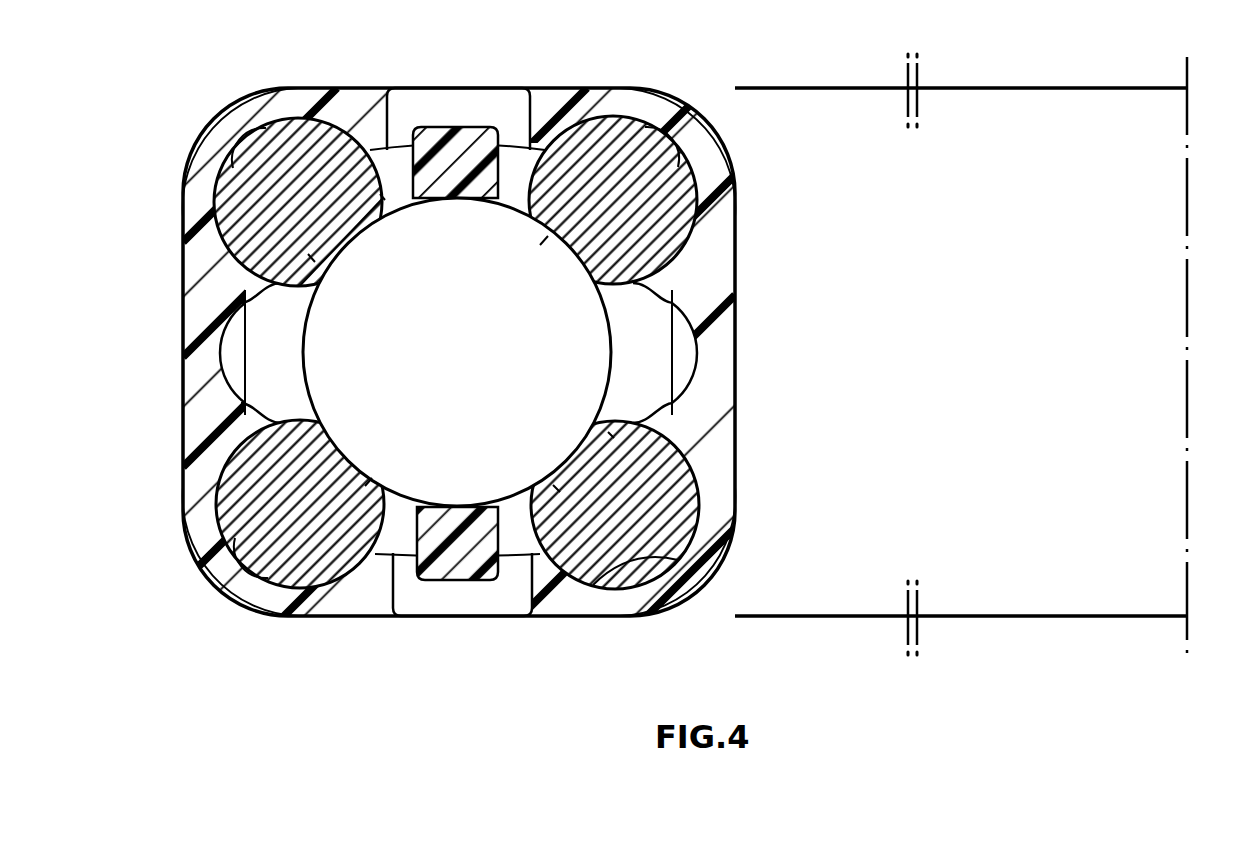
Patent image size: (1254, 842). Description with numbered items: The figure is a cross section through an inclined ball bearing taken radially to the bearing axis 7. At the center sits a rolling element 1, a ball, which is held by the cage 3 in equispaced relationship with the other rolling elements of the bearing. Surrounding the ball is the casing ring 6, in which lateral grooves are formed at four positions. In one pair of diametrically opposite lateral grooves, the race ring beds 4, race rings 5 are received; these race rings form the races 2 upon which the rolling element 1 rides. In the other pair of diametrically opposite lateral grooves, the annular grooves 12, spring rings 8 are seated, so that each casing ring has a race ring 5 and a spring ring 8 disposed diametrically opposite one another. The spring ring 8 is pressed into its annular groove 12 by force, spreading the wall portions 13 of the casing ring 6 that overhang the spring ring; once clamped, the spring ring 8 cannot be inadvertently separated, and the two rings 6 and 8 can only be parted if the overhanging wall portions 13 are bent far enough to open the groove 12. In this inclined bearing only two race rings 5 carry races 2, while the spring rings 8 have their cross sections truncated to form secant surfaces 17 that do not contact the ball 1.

The rolling element 1 is at (470, 361).
The race 2 is at (578, 279).
The cage 3 is at (474, 145).
The race ring bed 4 is at (703, 184).
The race ring 5 is at (540, 245).
The casing ring 6 is at (770, 386).
The bearing axis 7 is at (1187, 222).
The spring ring 8 is at (315, 262).
The annular groove 12 is at (267, 160).
The wall portion 13 is at (378, 97).
The secant surface 17 is at (385, 200).